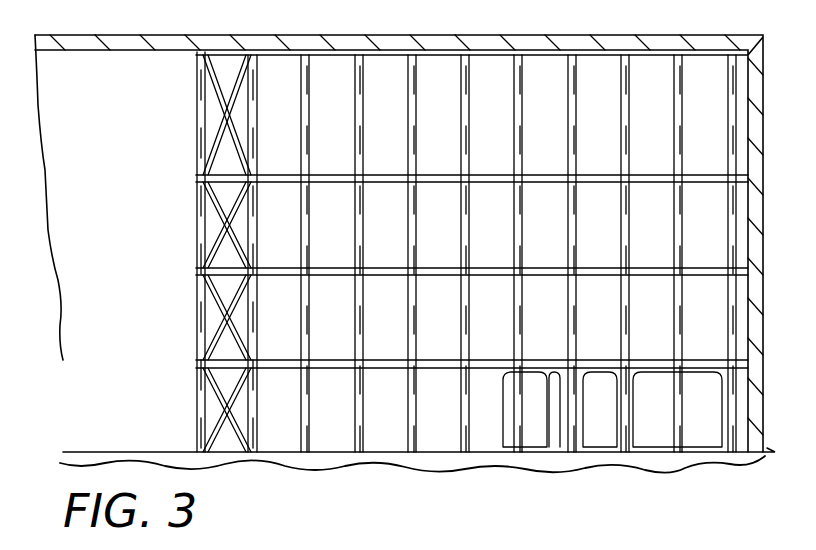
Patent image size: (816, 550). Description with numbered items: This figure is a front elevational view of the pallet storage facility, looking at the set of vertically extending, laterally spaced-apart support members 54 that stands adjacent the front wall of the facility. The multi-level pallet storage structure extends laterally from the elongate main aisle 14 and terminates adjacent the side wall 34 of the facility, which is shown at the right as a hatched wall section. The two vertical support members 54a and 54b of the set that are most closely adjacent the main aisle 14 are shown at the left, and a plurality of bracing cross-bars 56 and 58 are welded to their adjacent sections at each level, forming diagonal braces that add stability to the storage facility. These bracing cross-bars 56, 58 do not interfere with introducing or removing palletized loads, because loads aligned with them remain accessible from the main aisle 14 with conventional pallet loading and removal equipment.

The main aisle 14 is at (88, 452).
The side wall 34 is at (752, 94).
The support members 54 is at (222, 228).
The vertical support member 54a is at (198, 102).
The vertical support member 54b is at (253, 75).
The bracing cross-bar 56 is at (220, 107).
The bracing cross-bar 58 is at (215, 144).